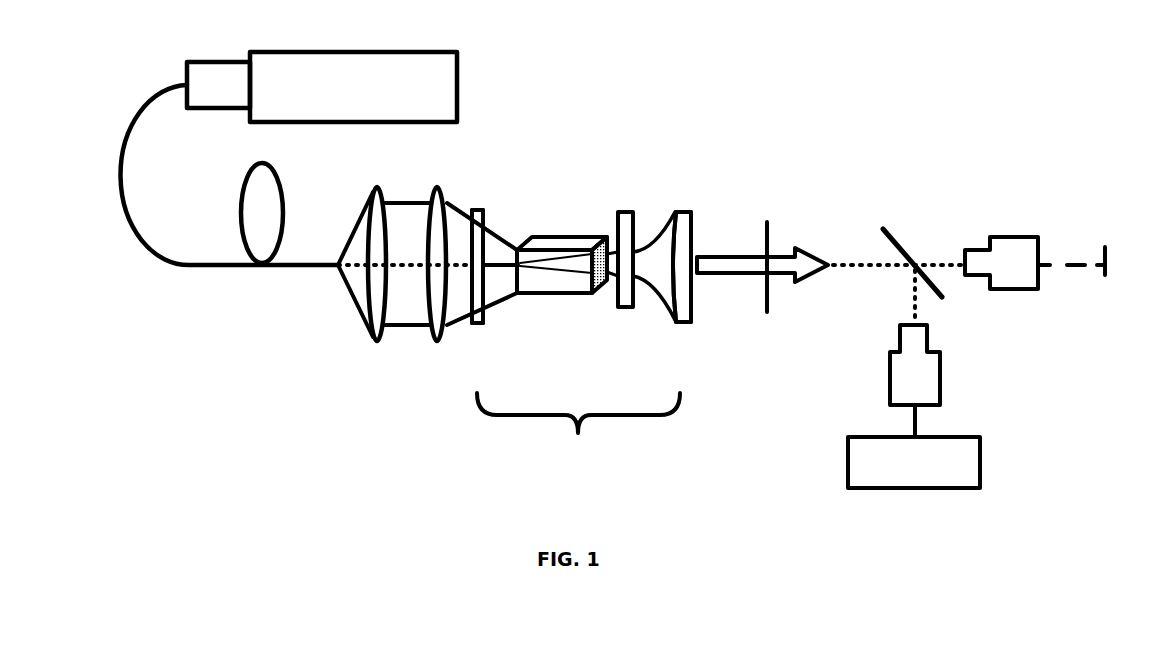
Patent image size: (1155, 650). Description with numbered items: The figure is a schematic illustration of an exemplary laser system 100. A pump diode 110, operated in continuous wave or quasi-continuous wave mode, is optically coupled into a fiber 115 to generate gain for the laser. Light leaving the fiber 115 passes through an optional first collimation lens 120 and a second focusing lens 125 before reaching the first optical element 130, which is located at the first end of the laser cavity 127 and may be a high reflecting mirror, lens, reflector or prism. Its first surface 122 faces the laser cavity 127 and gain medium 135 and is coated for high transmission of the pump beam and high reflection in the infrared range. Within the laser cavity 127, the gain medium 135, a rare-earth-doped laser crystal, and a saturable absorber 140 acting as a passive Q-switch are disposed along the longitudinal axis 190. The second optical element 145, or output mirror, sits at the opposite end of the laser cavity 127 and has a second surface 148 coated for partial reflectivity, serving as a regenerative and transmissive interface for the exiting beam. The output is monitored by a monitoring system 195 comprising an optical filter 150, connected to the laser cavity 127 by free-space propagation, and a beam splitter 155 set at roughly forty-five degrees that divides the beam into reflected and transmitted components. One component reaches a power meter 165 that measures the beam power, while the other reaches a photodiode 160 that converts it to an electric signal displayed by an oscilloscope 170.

The laser system 100 is at (148, 39).
The pump diode 110 is at (458, 62).
The fiber 115 is at (162, 257).
The first collimation lens 120 is at (373, 343).
The second focusing lens 125 is at (440, 343).
The first surface 122 is at (478, 322).
The first optical element 130 is at (515, 190).
The gain medium 135 is at (530, 233).
The saturable absorber 140 is at (630, 307).
The second optical element 145 is at (682, 210).
The second surface 148 is at (683, 327).
The optical filter 150 is at (767, 312).
The beam splitter 155 is at (882, 228).
The photodiode 160 is at (890, 392).
The power meter 165 is at (1023, 290).
The oscilloscope 170 is at (848, 478).
The longitudinal axis 190 is at (1107, 247).
The monitoring system 195 is at (945, 160).
The laser cavity 127 is at (582, 445).